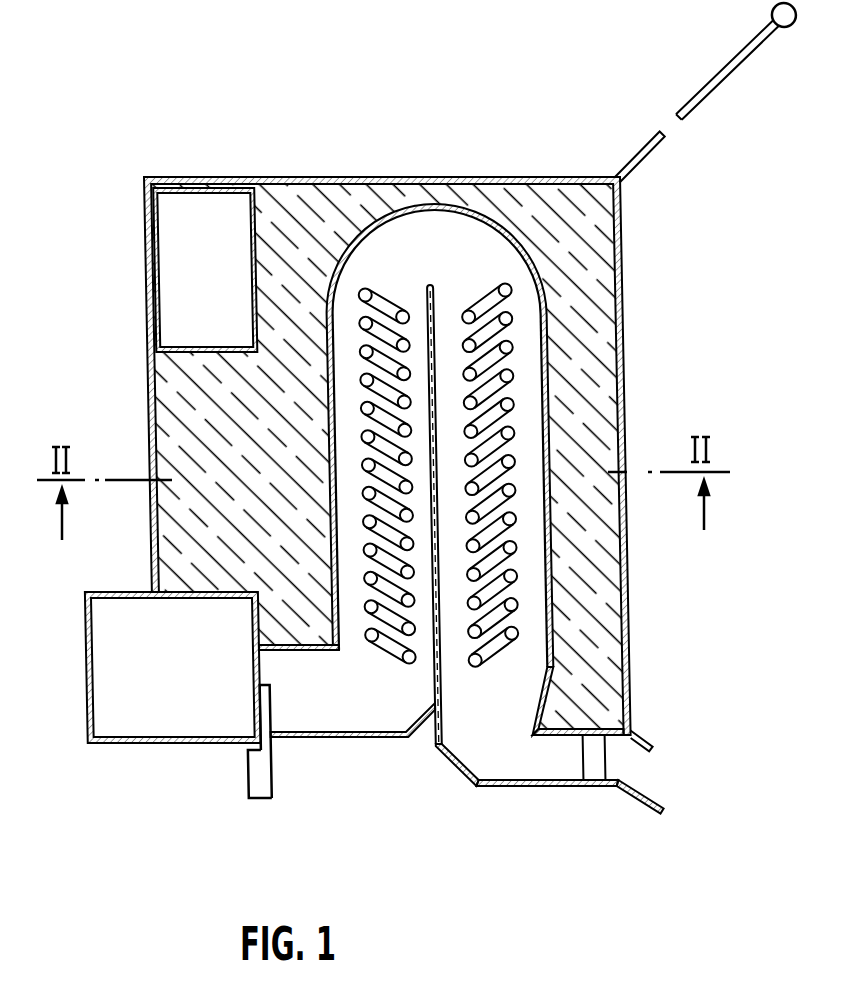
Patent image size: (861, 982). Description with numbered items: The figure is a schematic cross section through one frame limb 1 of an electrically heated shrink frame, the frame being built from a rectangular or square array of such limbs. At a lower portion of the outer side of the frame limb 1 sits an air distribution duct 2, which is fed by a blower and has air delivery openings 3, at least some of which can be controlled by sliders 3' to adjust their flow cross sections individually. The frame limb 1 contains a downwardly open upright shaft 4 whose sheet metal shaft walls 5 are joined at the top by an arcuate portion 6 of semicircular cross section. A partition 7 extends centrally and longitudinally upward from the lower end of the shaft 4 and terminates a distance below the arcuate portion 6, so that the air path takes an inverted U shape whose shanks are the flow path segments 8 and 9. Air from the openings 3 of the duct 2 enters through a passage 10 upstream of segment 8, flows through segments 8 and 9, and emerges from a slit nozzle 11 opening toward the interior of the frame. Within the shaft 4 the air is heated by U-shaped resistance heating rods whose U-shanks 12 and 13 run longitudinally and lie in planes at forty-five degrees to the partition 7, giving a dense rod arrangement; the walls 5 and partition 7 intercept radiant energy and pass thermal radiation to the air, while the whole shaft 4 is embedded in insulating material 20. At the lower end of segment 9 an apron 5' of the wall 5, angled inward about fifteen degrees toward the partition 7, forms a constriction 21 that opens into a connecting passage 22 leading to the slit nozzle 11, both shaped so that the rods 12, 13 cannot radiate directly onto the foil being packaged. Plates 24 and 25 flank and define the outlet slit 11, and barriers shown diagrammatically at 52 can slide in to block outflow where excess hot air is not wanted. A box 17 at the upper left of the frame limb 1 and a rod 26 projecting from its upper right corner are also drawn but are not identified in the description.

The frame limb 1 is at (624, 328).
The air distribution duct 2 is at (102, 652).
The air delivery opening 3 is at (241, 737).
The slider 3' is at (237, 785).
The upright shaft 4 is at (451, 230).
The shaft wall 5 is at (440, 476).
The apron 5' is at (525, 701).
The arcuate portion 6 is at (500, 230).
The partition 7 is at (437, 535).
The flow path segment 8 is at (355, 445).
The flow path segment 9 is at (536, 443).
The passage 10 is at (338, 717).
The slit nozzle 11 is at (625, 760).
The U-shank of heating rod 12 is at (505, 288).
The U-shank of heating rod 13 is at (461, 313).
The control box 17 is at (165, 218).
The insulating material 20 is at (618, 566).
The constriction 21 is at (485, 733).
The connecting passage 22 is at (483, 767).
The plate 24 is at (642, 742).
The plate 25 is at (640, 797).
The handle rod 26 is at (716, 78).
The barrier 52 is at (583, 762).